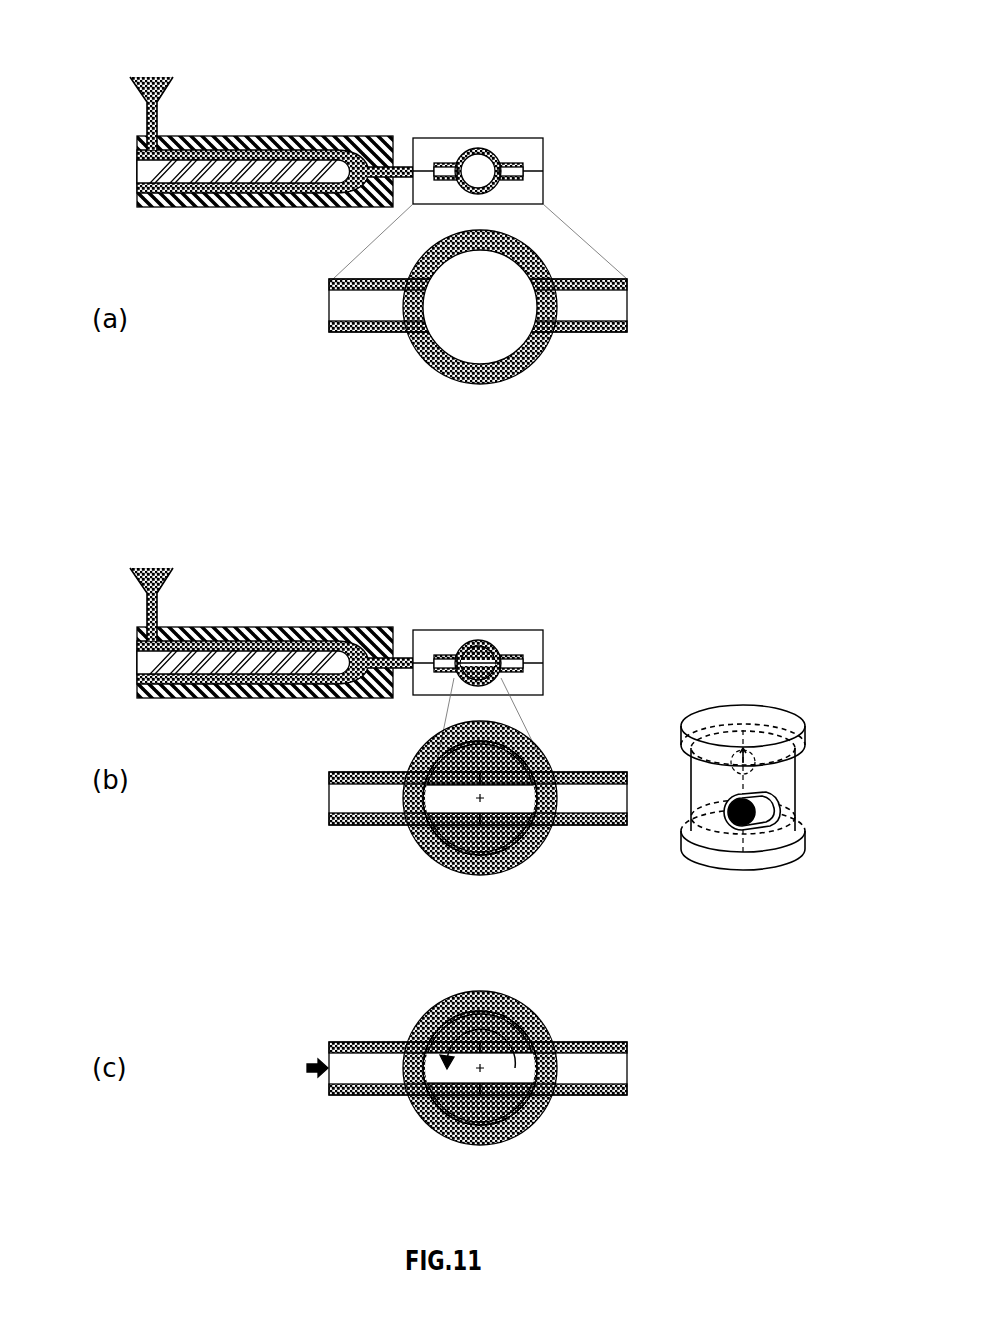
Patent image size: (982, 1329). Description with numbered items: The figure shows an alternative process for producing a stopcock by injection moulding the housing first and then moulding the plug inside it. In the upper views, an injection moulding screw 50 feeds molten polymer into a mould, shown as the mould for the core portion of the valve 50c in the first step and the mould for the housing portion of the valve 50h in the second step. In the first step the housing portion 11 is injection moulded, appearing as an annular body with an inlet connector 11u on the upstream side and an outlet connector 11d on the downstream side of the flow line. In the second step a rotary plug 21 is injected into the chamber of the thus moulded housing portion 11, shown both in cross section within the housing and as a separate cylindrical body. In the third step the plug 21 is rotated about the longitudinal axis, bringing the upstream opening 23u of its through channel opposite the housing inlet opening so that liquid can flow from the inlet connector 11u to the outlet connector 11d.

The injection moulding screw 50 is at (300, 136).
The mould for the core portion of the valve 50c is at (495, 137).
The mould for the housing portion of the valve 50h is at (497, 628).
The housing portion of the valve 11 is at (420, 366).
The inlet connector of housing portion of the valve 11u is at (350, 340).
The outlet connector of housing portion of the valve 11d is at (598, 340).
The rotary plug of the valve 21 is at (507, 330).
The upstream opening of valve plug channel 23u is at (530, 800).